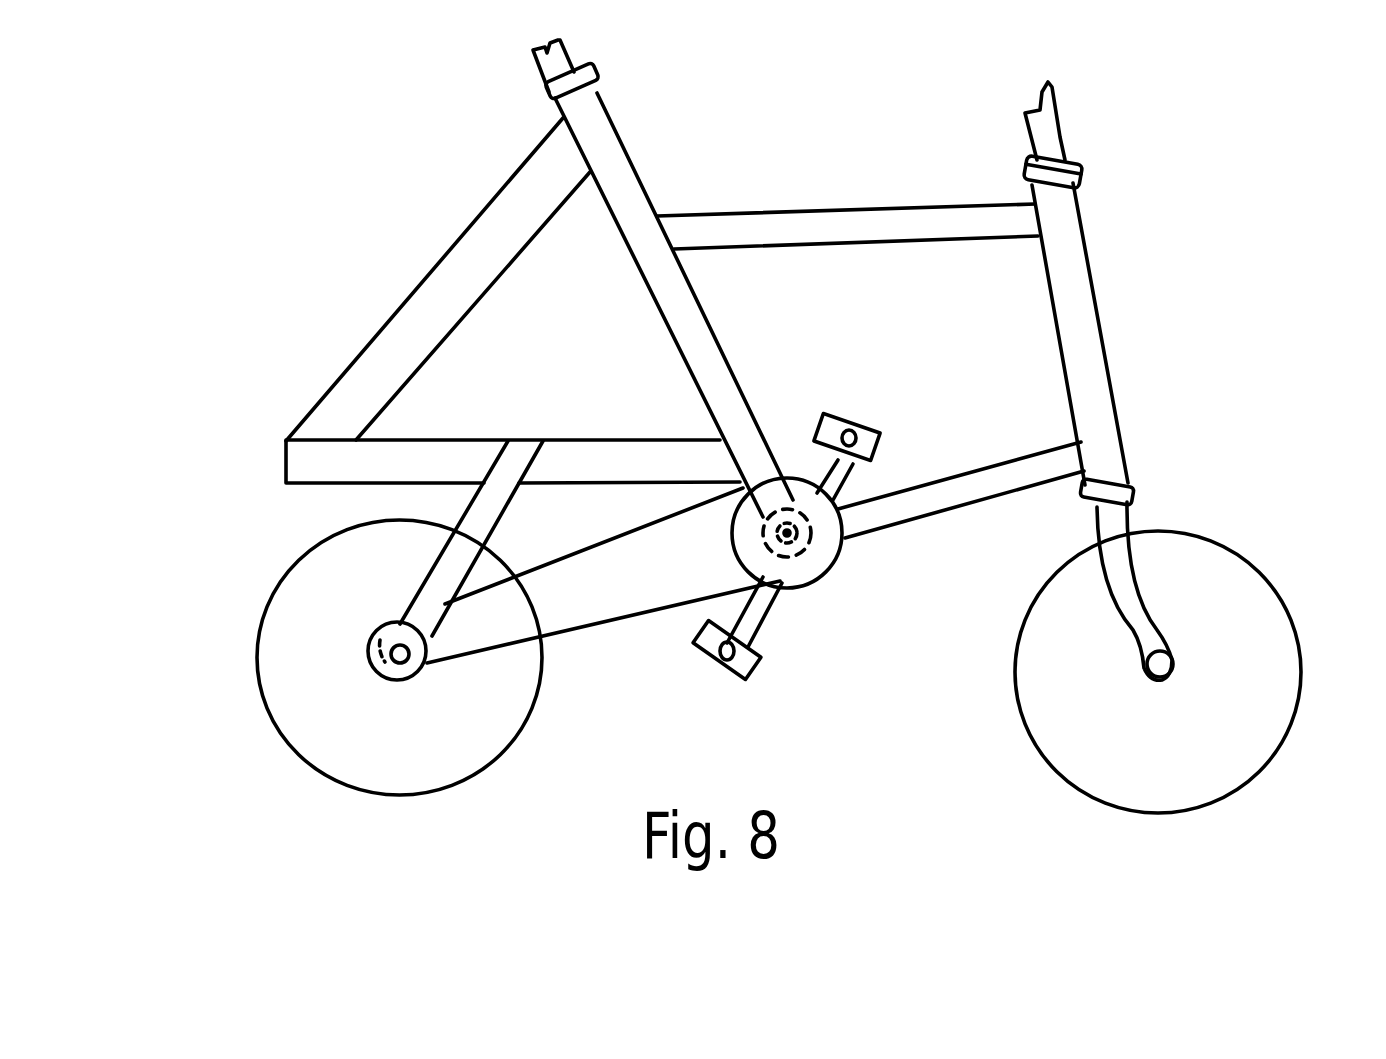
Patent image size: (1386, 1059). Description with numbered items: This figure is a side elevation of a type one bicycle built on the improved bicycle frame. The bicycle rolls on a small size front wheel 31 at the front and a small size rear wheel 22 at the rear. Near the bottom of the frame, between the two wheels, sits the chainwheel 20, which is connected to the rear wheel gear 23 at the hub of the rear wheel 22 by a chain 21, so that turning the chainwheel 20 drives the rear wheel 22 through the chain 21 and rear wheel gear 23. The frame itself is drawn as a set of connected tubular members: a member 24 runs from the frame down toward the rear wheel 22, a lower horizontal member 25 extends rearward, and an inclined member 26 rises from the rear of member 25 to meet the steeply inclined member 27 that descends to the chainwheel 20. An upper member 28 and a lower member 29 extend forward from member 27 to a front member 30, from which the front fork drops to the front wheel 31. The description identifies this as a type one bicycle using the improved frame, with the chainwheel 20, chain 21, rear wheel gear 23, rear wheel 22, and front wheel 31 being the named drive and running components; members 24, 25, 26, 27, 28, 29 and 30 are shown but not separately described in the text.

The chainwheel 20 is at (820, 583).
The chain 21 is at (607, 633).
The rear wheel 22 is at (262, 712).
The rear wheel gear 23 is at (367, 652).
The seat stay 24 is at (493, 523).
The lower frame member 25 is at (602, 485).
The rear diagonal frame member 26 is at (416, 288).
The seat tube 27 is at (726, 358).
The top tube 28 is at (829, 211).
The down tube 29 is at (957, 509).
The head tube 30 is at (1099, 327).
The front wheel 31 is at (1310, 665).